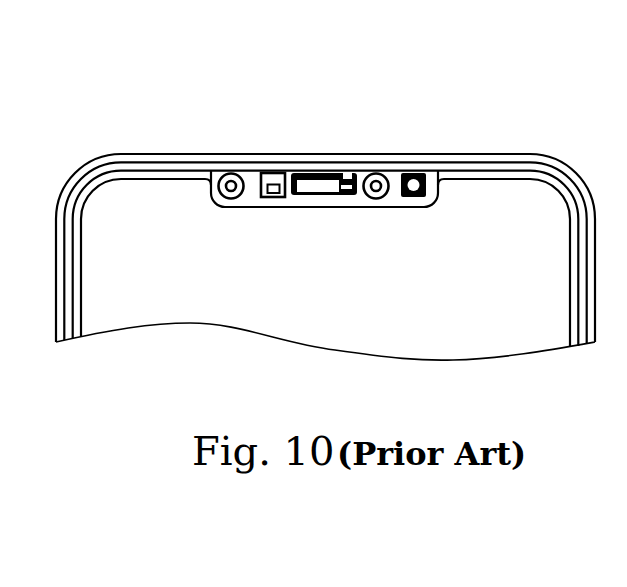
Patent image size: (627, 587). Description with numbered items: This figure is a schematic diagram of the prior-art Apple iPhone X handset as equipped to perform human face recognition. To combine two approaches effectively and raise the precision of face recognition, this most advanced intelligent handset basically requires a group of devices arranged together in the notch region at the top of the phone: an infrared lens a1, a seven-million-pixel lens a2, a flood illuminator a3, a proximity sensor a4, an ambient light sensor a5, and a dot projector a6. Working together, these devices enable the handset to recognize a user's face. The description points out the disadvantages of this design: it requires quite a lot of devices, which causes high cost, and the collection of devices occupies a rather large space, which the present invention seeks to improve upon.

The infrared lens a1 is at (232, 176).
The seven-million-pixel lens a2 is at (375, 177).
The flood illuminator a3 is at (267, 177).
The proximity sensor a4 is at (282, 177).
The ambient light sensor a5 is at (329, 177).
The dot projector a6 is at (414, 177).